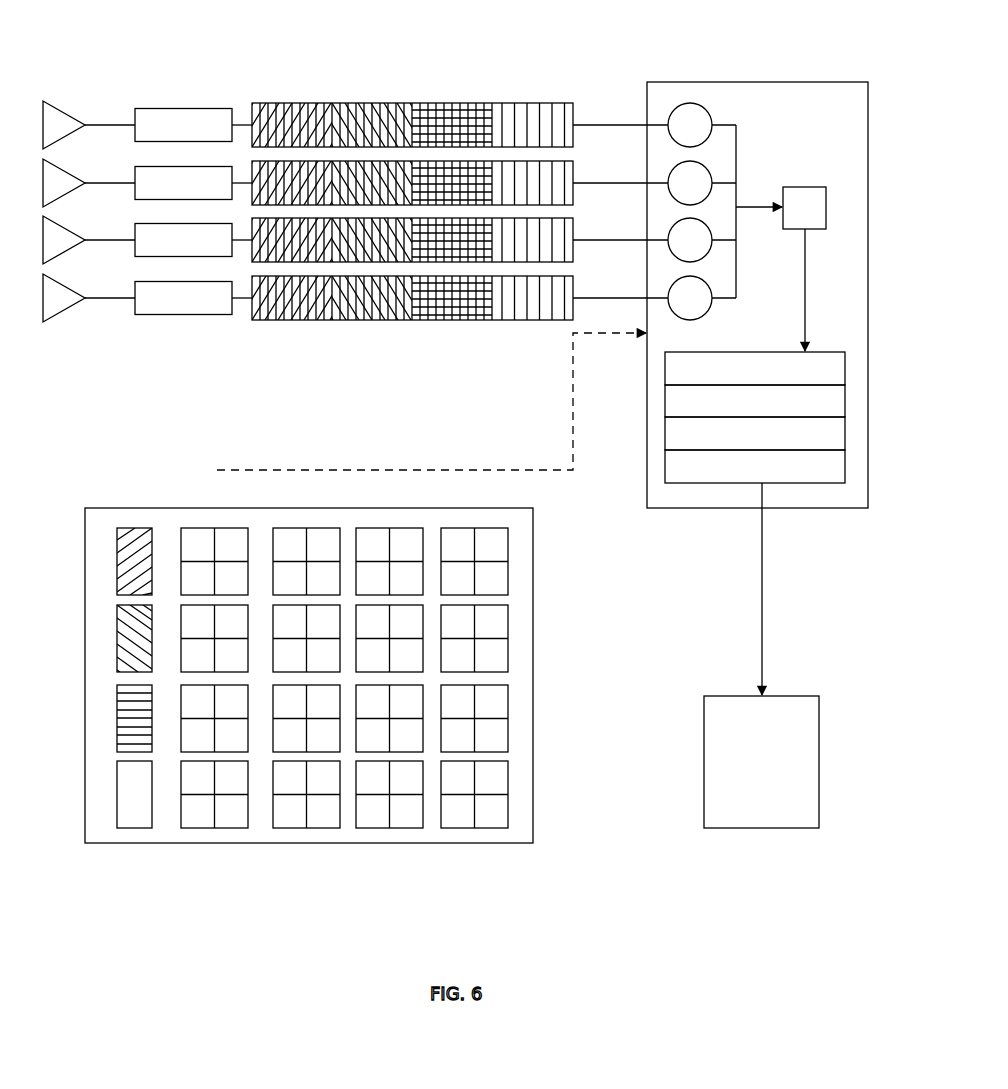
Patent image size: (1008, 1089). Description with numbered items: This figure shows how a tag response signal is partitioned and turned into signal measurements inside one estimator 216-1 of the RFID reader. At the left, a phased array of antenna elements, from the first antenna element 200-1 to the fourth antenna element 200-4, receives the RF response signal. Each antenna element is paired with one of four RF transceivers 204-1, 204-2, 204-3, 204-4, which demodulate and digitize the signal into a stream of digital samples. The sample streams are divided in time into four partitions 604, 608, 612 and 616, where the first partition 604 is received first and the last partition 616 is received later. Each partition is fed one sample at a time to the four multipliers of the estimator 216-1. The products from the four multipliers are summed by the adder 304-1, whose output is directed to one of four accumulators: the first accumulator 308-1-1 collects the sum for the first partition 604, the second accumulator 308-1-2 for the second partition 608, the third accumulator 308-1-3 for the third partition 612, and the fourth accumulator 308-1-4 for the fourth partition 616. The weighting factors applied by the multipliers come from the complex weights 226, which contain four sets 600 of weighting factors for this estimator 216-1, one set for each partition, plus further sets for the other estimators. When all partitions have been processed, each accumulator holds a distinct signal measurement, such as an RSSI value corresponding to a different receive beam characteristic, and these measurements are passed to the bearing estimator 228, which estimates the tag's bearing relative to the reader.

The antenna element 200-1 is at (43, 101).
The antenna element 200-4 is at (43, 322).
The RF transceiver 204-1 is at (168, 125).
The RF transceiver 204-2 is at (168, 183).
The RF transceiver 204-3 is at (168, 240).
The RF transceiver 204-4 is at (168, 298).
The first partition 604 is at (252, 100).
The second partition 608 is at (332, 100).
The third partition 612 is at (412, 100).
The fourth partition 616 is at (573, 100).
The estimator 216-1 is at (757, 295).
The adder 304-1 is at (793, 187).
The first accumulator 308-1-1 is at (755, 368).
The second accumulator 308-1-2 is at (755, 401).
The third accumulator 308-1-3 is at (755, 433).
The fourth accumulator 308-1-4 is at (755, 466).
The bearing estimator 228 is at (761, 762).
The complex weights 226 is at (308, 843).
The sets of weighting factors 600 is at (263, 522).